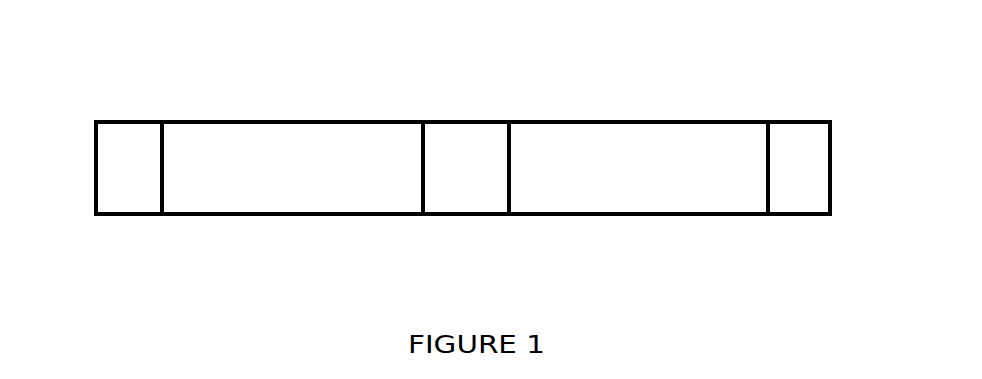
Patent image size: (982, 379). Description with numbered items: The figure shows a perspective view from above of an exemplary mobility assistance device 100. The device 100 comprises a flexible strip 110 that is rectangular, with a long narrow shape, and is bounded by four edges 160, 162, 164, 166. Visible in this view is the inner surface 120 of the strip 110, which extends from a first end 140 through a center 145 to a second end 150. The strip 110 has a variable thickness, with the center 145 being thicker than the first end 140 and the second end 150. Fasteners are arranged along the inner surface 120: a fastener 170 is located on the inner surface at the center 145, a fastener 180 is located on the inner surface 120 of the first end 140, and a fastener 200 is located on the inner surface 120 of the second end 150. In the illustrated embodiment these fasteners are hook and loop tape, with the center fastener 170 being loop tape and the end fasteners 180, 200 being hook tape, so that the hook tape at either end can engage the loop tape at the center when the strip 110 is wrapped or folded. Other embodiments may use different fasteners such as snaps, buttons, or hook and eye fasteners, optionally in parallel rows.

The mobility assistance device 100 is at (196, 320).
The flexible strip 110 is at (717, 140).
The inner surface 120 is at (287, 147).
The first end 140 is at (96, 157).
The center 145 is at (457, 120).
The second end 150 is at (832, 145).
The edge 160 is at (612, 216).
The edge 162 is at (833, 190).
The edge 164 is at (660, 118).
The edge 166 is at (96, 200).
The fastener 170 is at (478, 138).
The fastener 180 is at (133, 202).
The fastener 200 is at (802, 197).